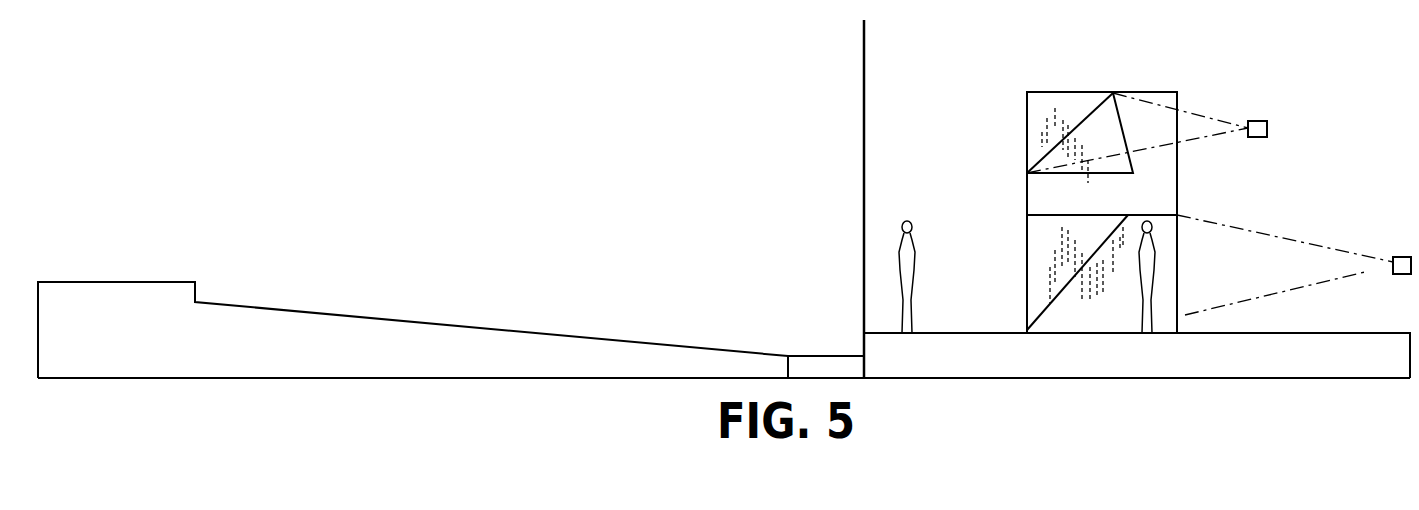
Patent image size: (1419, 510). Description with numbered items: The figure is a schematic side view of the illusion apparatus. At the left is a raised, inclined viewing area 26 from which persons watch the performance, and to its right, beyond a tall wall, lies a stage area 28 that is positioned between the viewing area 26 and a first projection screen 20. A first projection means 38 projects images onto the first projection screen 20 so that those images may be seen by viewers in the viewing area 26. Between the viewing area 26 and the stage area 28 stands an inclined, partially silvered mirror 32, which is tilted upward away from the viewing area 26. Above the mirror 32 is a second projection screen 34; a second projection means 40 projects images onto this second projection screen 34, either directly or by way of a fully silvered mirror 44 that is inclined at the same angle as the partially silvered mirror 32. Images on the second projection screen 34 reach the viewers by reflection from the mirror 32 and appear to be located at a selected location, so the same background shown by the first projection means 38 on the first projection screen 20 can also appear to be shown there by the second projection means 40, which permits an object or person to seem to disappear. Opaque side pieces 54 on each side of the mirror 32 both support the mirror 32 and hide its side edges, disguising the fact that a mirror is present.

The first projection screen 20 is at (1177, 258).
The viewing area 26 is at (453, 323).
The stage area 28 is at (1103, 335).
The partially silvered mirror 32 is at (1062, 284).
The second projection screen 34 is at (1082, 176).
The first projection means 38 is at (1398, 257).
The second projection means 40 is at (1265, 121).
The fully silvered mirror 44 is at (1102, 103).
The opaque side pieces 54 is at (1048, 256).